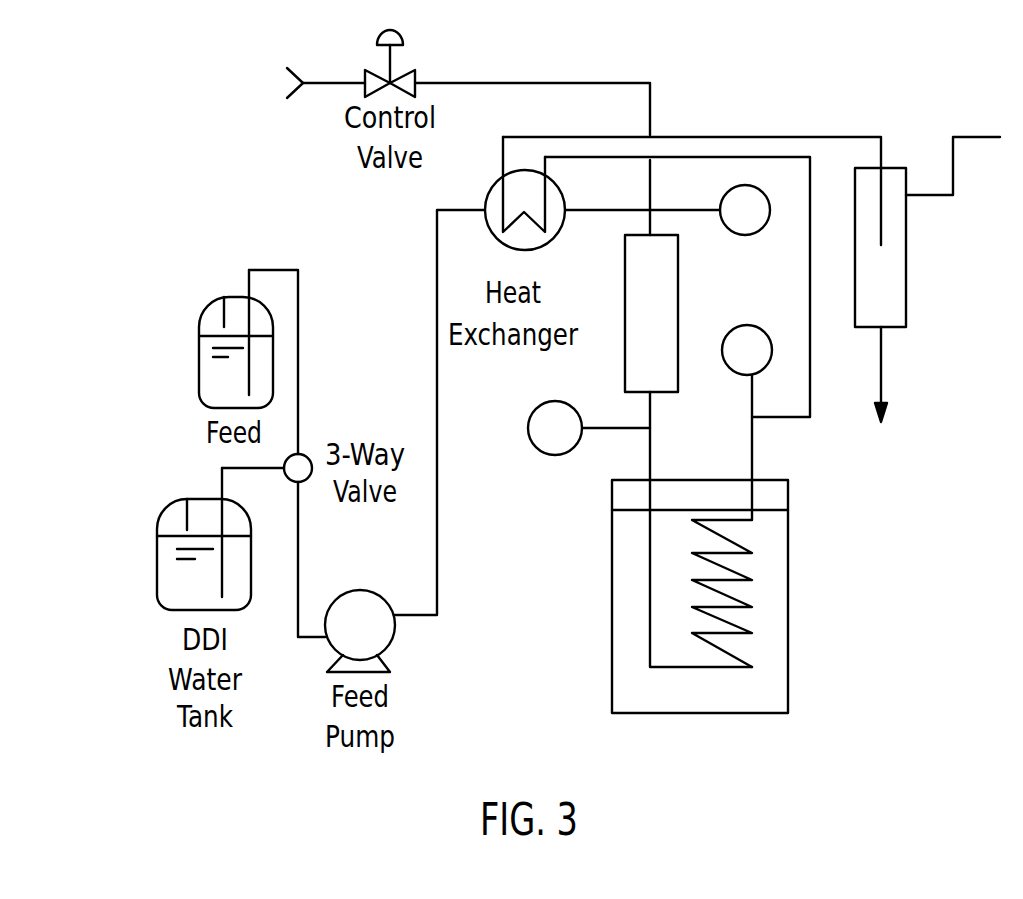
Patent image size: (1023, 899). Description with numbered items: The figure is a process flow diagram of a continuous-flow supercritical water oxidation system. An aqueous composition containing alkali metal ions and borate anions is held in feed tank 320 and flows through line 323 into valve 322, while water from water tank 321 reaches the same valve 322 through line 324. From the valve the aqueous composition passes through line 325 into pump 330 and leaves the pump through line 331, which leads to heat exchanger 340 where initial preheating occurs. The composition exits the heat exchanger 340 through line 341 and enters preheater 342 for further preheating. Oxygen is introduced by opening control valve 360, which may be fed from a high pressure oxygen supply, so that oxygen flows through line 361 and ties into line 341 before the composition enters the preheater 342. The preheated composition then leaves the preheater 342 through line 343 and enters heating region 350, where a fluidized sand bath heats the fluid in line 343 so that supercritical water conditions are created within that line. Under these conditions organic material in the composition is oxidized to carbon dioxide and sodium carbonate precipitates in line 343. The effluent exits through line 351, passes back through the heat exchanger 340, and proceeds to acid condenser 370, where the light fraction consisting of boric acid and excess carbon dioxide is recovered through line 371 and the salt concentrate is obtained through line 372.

The feed tank 320 is at (200, 342).
The water tank 321 is at (157, 538).
The valve 322 is at (307, 455).
The line 323 is at (300, 320).
The line 324 is at (284, 468).
The line 325 is at (300, 580).
The pump 330 is at (392, 640).
The line 331 is at (437, 532).
The heat exchanger 340 is at (488, 207).
The line 341 is at (580, 209).
The preheater 342 is at (678, 320).
The line 343 is at (672, 422).
The heating region 350 is at (612, 573).
The line 351 is at (755, 455).
The control valve 360 is at (413, 72).
The line 361 is at (525, 83).
The acid condenser 370 is at (905, 320).
The line 371 is at (952, 157).
The line 372 is at (883, 390).